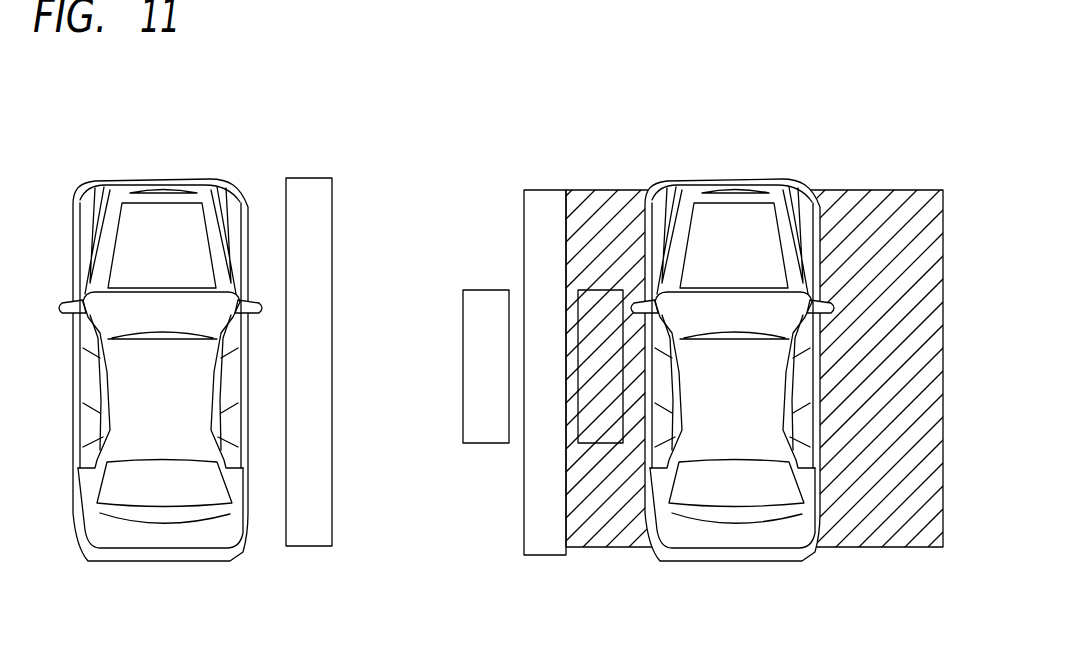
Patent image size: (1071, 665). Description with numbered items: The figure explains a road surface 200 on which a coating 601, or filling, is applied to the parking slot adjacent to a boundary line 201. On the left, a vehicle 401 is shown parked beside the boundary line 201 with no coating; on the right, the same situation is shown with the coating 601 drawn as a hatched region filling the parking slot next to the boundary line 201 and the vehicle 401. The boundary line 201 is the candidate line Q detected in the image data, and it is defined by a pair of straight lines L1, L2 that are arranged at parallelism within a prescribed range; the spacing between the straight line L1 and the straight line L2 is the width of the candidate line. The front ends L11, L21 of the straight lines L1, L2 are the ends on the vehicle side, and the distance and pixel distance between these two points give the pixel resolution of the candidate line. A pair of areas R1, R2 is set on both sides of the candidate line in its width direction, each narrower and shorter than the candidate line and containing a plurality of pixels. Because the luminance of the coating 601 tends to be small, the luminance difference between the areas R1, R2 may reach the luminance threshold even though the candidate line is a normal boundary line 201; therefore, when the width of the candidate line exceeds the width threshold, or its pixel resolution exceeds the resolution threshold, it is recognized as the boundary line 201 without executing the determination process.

The road surface 200 is at (431, 238).
The boundary line 201 is at (302, 178).
The vehicle 401 is at (162, 178).
The coating 601 is at (630, 190).
The front end of straight line L2 L21 is at (524, 190).
The front end of straight line L1 L11 is at (566, 190).
The straight line L2 is at (513, 539).
The straight line L1 is at (558, 539).
The area R2 is at (483, 443).
The area R1 is at (600, 443).